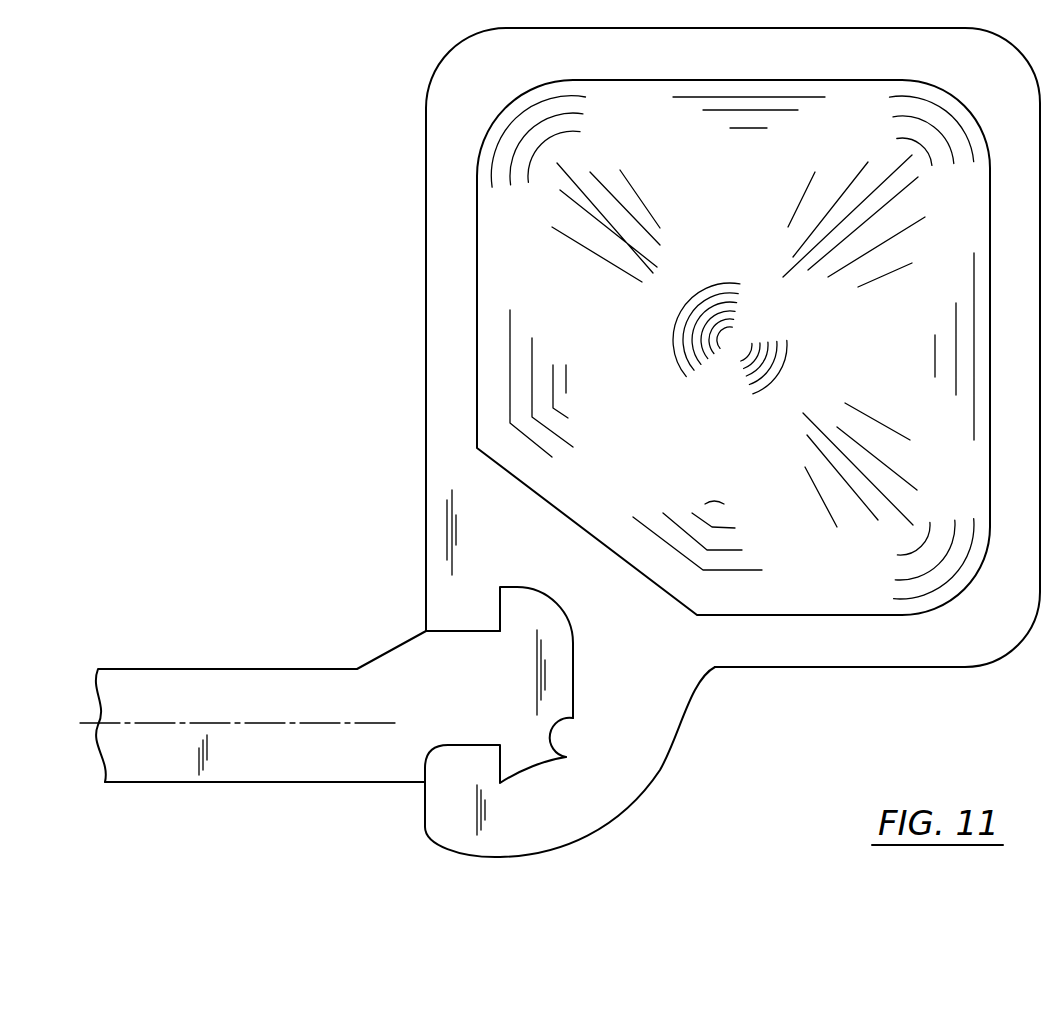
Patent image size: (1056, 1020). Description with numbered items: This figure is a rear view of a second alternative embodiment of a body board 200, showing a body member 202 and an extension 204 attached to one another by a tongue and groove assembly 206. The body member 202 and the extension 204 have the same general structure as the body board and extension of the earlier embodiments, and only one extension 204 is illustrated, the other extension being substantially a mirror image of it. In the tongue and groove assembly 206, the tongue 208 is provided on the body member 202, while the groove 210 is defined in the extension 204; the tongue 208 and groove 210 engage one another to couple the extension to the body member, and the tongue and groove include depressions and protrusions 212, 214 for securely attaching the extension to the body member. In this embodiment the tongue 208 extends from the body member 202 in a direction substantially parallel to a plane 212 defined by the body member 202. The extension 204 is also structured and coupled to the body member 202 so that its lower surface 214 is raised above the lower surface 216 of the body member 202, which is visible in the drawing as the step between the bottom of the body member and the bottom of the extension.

The body board 200 is at (560, 442).
The body member 202 is at (205, 687).
The extension 204 is at (940, 650).
The tongue and groove assembly 206 is at (388, 483).
The tongue 208 is at (520, 757).
The groove 210 is at (566, 757).
The plane 212 is at (280, 722).
The lower surface 214 is at (868, 667).
The lower surface 216 is at (228, 783).